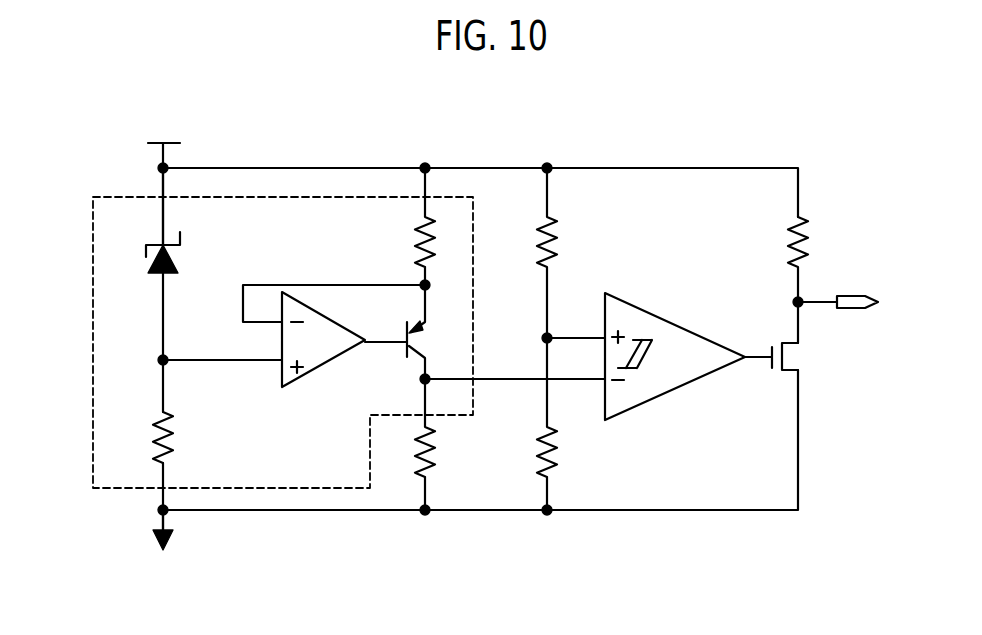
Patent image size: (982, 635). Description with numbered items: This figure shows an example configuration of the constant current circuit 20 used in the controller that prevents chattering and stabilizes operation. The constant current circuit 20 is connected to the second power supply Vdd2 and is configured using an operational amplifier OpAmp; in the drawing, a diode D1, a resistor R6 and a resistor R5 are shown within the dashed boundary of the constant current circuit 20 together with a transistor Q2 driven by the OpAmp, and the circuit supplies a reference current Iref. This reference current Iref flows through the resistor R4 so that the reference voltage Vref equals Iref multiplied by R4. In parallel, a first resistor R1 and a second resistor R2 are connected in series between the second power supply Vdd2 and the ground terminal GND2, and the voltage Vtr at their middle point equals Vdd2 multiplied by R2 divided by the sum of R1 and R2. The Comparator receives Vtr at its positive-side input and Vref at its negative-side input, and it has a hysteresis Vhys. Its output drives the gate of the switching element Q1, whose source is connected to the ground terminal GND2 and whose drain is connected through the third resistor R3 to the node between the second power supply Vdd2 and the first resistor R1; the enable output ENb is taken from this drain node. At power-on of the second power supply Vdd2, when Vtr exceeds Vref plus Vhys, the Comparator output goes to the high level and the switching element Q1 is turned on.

The constant current circuit 20 is at (303, 197).
The second power supply Vdd2 is at (166, 137).
The ground terminal GND2 is at (164, 550).
The reference current Iref is at (120, 195).
The zener diode D1 is at (181, 264).
The resistor R6 is at (158, 433).
The resistor R5 is at (415, 237).
The resistor R4 is at (433, 457).
The first resistor R1 is at (538, 237).
The second resistor R2 is at (556, 456).
The third resistor R3 is at (784, 237).
The operational amplifier OpAmp is at (294, 355).
The PNP transistor Q2 is at (414, 338).
The switching element Q1 is at (800, 353).
The reference voltage Vref is at (512, 363).
The threshold voltage Vtr is at (573, 321).
The hysteresis voltage Vhys is at (665, 356).
The comparator Comparator is at (671, 342).
The enable output terminal ENb is at (835, 277).